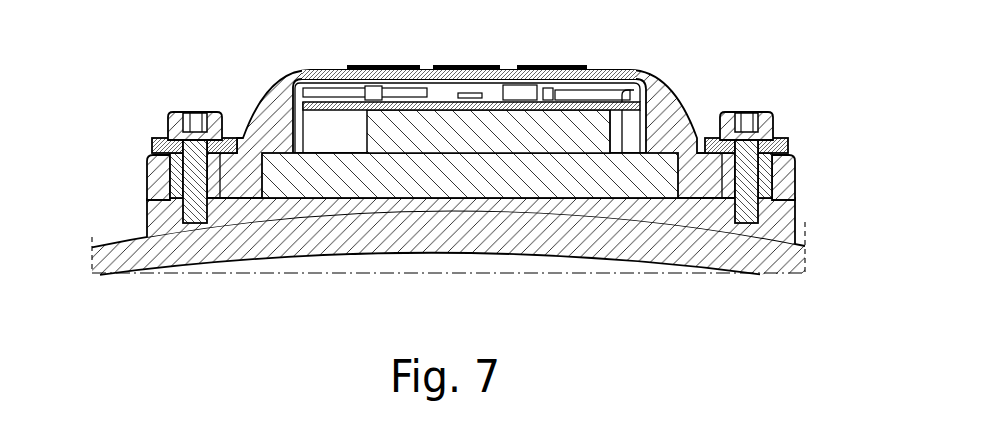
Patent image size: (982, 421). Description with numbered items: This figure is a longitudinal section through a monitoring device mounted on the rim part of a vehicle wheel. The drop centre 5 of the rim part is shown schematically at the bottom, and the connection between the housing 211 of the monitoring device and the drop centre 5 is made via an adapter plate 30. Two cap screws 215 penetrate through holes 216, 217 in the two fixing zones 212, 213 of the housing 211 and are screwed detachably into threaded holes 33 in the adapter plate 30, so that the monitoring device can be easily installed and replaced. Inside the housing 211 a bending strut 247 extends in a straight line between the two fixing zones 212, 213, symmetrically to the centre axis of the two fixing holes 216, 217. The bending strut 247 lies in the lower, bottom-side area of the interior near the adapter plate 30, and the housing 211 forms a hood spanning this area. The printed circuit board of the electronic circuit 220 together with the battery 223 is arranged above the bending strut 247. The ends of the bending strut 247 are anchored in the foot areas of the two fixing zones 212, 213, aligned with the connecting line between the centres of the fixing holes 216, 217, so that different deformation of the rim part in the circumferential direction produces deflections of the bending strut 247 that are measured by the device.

The drop centre 5 is at (302, 248).
The adapter plate 30 is at (700, 217).
The threaded holes 33 is at (208, 223).
The housing 211 is at (667, 118).
The fixing zone 212 is at (158, 167).
The fixing zone 213 is at (783, 167).
The cap screws 215 is at (187, 113).
The hole 216 is at (170, 188).
The hole 217 is at (772, 190).
The electronic circuit 220 is at (418, 112).
The battery 223 is at (557, 130).
The bending strut 247 is at (423, 177).